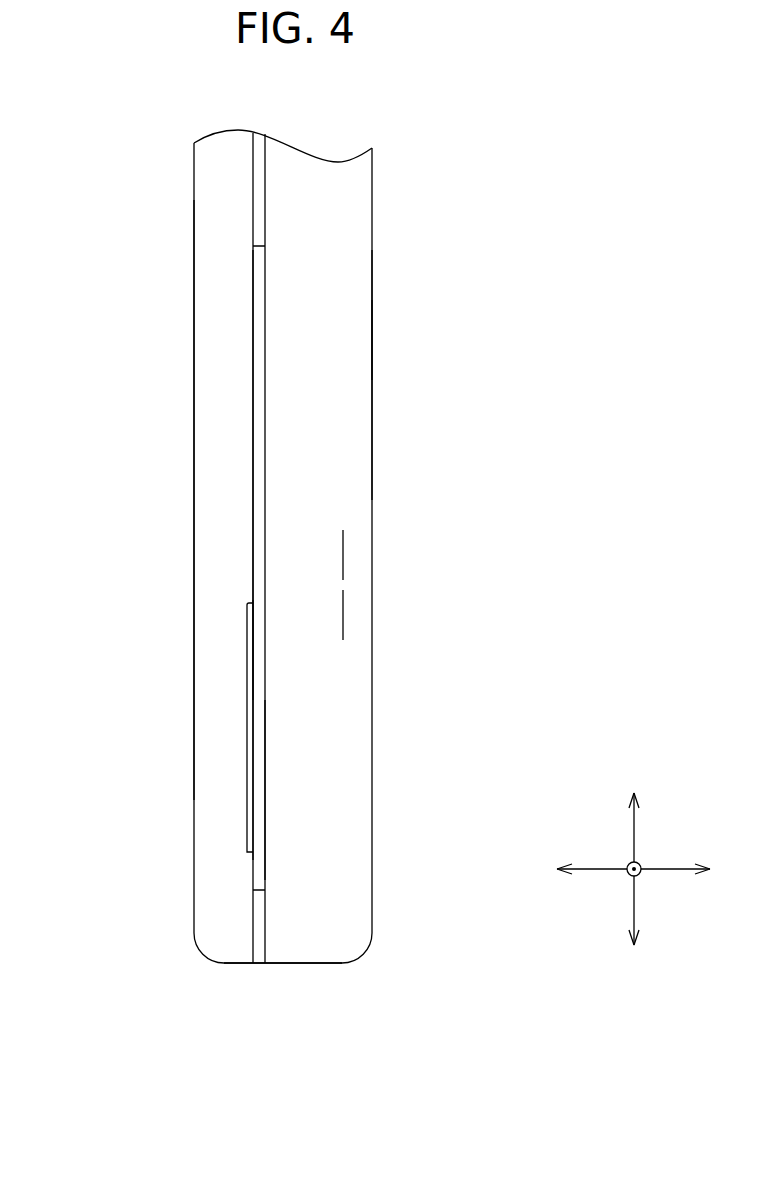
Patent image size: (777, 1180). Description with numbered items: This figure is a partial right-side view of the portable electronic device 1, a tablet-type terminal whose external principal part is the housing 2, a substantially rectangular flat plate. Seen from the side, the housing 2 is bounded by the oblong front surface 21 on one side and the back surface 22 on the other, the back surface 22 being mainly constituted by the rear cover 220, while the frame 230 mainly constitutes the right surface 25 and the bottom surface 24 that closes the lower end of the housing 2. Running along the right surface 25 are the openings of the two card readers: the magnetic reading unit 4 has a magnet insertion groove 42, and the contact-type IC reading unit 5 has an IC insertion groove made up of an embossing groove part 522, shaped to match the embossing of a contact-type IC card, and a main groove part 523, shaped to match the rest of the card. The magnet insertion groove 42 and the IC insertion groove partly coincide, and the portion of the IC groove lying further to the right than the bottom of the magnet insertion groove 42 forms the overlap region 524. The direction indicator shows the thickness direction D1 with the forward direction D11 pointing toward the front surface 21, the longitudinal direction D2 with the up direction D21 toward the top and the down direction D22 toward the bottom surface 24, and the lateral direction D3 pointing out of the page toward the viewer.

The portable electronic device 1 is at (50, 178).
The housing 2 is at (184, 250).
The front surface 21 is at (194, 376).
The back surface 22 is at (372, 405).
The rear cover 220 is at (372, 318).
The frame 230 is at (343, 557).
The right surface 25 is at (343, 610).
The bottom surface 24 is at (292, 963).
The magnetic reading unit 4 is at (267, 206).
The magnet insertion groove 42 is at (267, 918).
The overlap region 524 is at (267, 476).
The contact-type IC reading unit 5 is at (267, 687).
The main groove part 523 is at (260, 788).
The embossing groove part 522 is at (247, 718).
The thickness direction D1 is at (608, 870).
The forward direction D11 is at (607, 869).
The longitudinal direction D2 is at (638, 831).
The up direction D21 is at (634, 783).
The down direction D22 is at (634, 955).
The lateral direction D3 is at (645, 873).